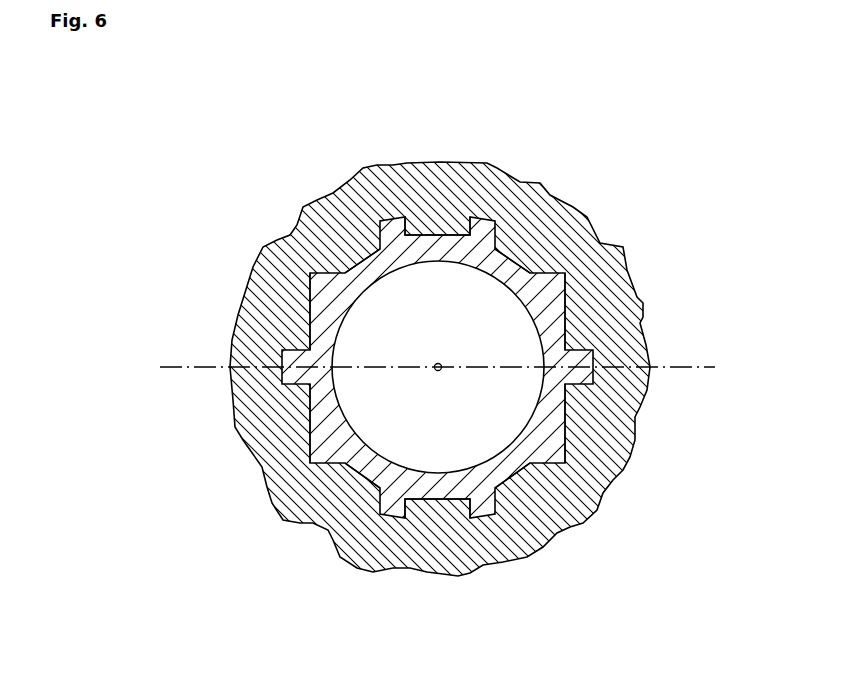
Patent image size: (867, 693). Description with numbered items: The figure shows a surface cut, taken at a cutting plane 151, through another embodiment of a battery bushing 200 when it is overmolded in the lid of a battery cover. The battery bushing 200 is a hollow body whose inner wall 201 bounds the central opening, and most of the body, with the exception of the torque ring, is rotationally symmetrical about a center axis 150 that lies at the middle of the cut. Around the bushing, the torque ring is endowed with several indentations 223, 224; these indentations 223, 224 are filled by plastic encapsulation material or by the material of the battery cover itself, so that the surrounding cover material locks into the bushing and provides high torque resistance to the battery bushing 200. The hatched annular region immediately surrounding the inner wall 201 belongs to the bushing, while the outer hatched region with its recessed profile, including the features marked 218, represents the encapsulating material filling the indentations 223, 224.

The center axis 150 is at (442, 366).
The cutting plane 151 is at (683, 366).
The battery bushing 200 is at (573, 270).
The inner wall 201 is at (540, 379).
The groove / key 218 is at (433, 222).
The indentation 223 is at (302, 218).
The indentation 224 is at (300, 308).